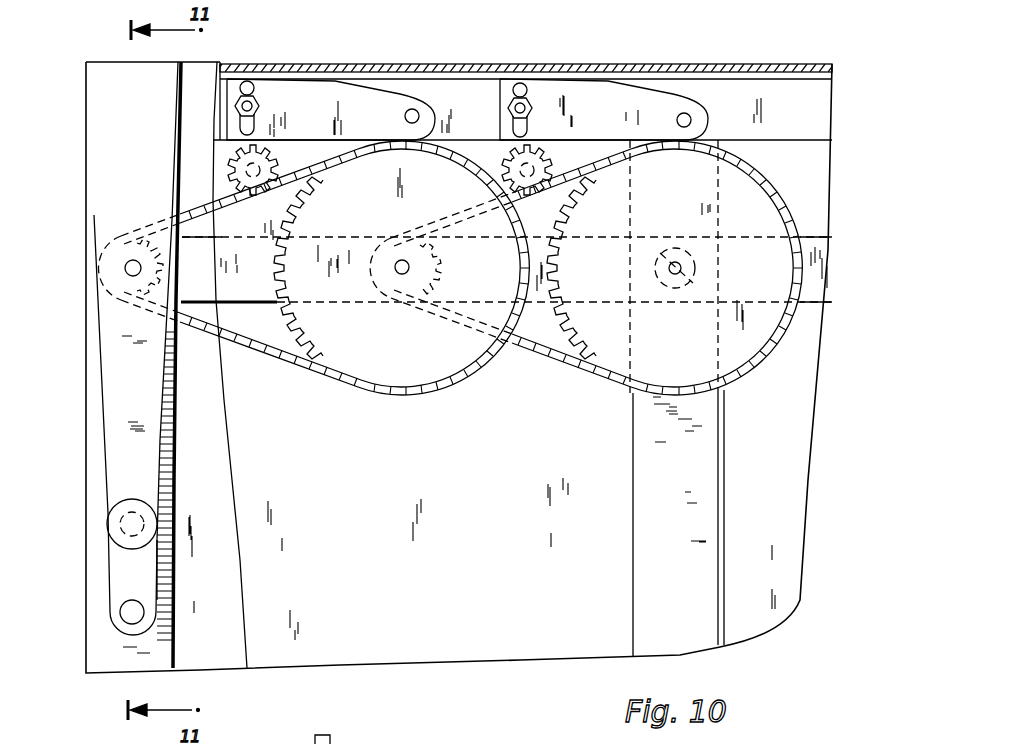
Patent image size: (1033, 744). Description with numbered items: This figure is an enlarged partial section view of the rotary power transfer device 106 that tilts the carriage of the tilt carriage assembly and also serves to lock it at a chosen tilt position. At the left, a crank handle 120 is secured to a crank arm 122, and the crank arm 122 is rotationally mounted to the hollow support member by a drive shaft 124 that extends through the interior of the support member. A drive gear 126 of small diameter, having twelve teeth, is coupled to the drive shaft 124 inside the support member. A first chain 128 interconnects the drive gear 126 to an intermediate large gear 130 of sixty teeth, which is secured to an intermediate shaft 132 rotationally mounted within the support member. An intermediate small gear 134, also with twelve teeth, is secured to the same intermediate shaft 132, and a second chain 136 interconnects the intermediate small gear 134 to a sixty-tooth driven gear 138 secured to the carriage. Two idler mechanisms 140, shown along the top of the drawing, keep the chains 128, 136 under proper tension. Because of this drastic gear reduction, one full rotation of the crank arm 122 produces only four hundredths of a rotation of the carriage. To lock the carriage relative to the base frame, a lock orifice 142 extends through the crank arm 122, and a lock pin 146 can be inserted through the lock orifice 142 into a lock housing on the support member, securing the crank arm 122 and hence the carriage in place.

The rotary power transfer device 106 is at (398, 450).
The crank handle 120 is at (125, 612).
The crank arm 122 is at (112, 383).
The drive shaft 124 is at (128, 270).
The drive gear 126 is at (100, 249).
The first chain 128 is at (292, 362).
The intermediate large gear 130 is at (406, 362).
The intermediate shaft 132 is at (399, 273).
The intermediate small gear 134 is at (417, 277).
The second chain 136 is at (627, 373).
The driven gear 138 is at (743, 353).
The idler mechanisms 140 is at (313, 87).
The lock orifice 142 is at (115, 517).
The lock pin 146 is at (118, 540).